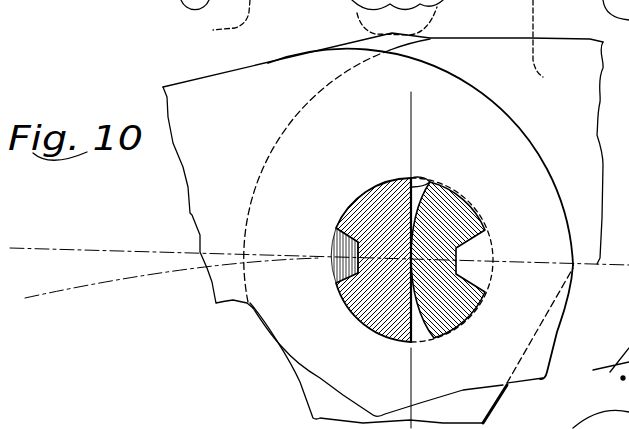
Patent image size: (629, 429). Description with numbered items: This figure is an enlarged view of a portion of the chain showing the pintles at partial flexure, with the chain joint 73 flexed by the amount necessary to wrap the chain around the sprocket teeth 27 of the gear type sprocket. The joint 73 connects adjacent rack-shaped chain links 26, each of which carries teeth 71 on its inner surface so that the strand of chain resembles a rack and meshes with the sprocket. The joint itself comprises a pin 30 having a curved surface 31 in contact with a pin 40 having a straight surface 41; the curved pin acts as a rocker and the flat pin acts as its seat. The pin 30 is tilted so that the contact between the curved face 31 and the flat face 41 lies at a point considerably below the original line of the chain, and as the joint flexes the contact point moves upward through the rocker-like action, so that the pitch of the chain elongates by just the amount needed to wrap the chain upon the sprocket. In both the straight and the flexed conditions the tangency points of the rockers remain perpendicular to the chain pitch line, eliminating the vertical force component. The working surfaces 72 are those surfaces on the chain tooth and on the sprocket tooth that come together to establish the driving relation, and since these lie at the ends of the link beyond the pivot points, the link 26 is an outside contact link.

The chain link 26 is at (512, 106).
The sprocket teeth 27 is at (231, 15).
The pin 30 is at (453, 210).
The curved surface 31 is at (426, 183).
The pin 40 is at (365, 208).
The straight surface 41 is at (414, 186).
The teeth 71 is at (358, 11).
The working surfaces 72 is at (546, 376).
The chain joint 73 is at (377, 172).